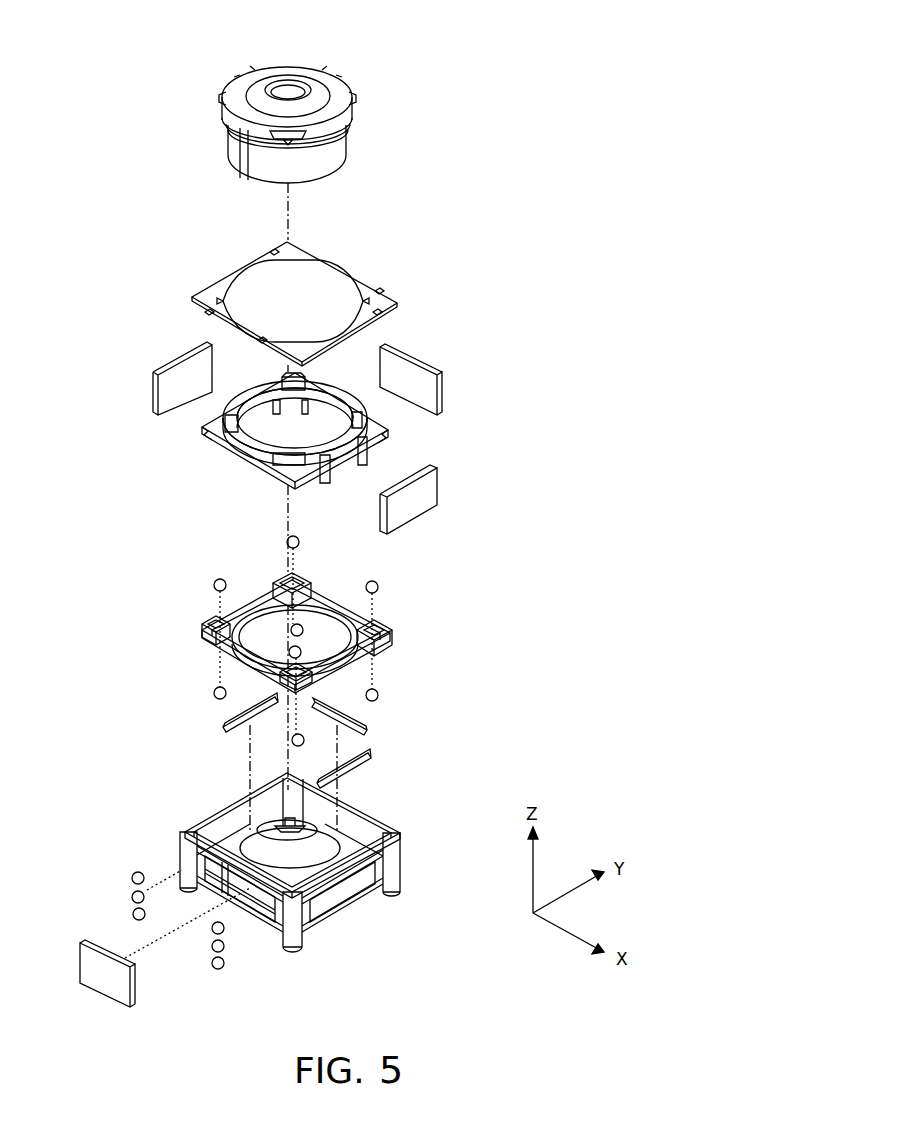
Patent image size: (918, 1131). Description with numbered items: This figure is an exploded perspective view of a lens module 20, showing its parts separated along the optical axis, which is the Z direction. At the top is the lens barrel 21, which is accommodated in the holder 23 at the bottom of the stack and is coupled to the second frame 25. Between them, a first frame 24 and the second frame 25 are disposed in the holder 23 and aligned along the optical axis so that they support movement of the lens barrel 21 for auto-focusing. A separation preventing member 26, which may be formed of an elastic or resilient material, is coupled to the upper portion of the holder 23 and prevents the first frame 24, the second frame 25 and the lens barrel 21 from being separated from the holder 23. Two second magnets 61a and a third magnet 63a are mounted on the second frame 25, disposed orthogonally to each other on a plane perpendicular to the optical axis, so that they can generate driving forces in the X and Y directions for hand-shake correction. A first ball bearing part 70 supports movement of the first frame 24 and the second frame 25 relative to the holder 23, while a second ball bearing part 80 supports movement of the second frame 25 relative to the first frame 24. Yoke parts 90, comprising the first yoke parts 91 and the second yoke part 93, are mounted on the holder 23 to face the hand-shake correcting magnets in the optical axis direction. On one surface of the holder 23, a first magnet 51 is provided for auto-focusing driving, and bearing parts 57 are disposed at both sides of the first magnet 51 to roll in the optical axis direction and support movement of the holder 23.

The lens module 20 is at (153, 25).
The lens barrel 21 is at (344, 150).
The separation preventing member 26 is at (214, 293).
The second magnets 61a is at (152, 360).
The third magnet 63a is at (436, 388).
The second frame 25 is at (403, 430).
The first frame 24 is at (193, 627).
The second ball bearing part 80 is at (378, 587).
The first ball bearing part 70 is at (213, 693).
The yoke parts 90 is at (383, 716).
The first yoke parts 91 is at (380, 690).
The second yoke part 93 is at (380, 717).
The holder 23 is at (388, 895).
The bearing parts 57 is at (132, 877).
The first magnet 51 is at (88, 965).